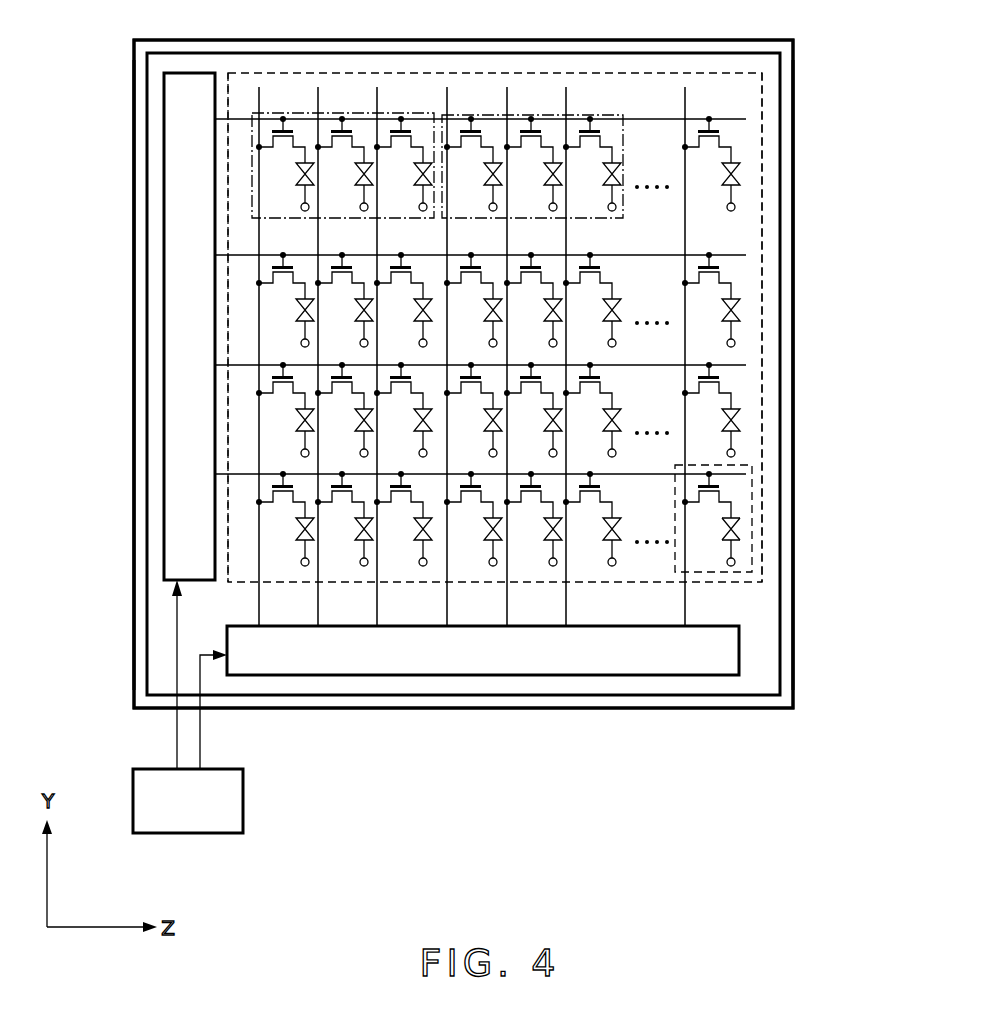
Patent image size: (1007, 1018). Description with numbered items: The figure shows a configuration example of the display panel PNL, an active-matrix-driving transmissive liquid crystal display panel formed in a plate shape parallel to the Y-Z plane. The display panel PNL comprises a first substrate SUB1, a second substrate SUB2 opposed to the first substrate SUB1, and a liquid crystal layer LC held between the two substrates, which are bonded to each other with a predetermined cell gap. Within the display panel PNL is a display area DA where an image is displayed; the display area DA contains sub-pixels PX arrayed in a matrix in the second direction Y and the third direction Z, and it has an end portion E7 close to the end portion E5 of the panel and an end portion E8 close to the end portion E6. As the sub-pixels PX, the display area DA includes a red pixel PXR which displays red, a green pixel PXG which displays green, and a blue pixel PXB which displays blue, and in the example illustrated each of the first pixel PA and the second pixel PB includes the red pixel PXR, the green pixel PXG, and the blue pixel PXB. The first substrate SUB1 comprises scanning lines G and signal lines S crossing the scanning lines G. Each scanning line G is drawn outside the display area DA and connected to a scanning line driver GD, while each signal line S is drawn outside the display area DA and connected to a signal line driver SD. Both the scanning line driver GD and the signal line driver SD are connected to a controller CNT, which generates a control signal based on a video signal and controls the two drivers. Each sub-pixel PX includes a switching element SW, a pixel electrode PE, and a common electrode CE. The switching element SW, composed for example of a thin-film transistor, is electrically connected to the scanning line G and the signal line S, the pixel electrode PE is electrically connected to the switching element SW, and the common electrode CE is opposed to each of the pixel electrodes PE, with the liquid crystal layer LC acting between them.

The display panel PNL is at (508, 714).
The first substrate SUB1 is at (348, 710).
The second substrate SUB2 is at (420, 696).
The end portion E5 is at (134, 137).
The end portion E6 is at (793, 160).
The end portion E7 is at (228, 526).
The end portion E8 is at (762, 287).
The display area DA is at (727, 583).
The scanning line driver GD is at (189, 326).
The signal line driver SD is at (483, 650).
The controller CNT is at (188, 706).
The signal line S is at (260, 99).
The scanning line G is at (733, 119).
The first pixel PA is at (252, 113).
The second pixel PB is at (623, 115).
The red pixel PXR is at (291, 196).
The green pixel PXG is at (350, 196).
The blue pixel PXB is at (409, 196).
The sub-pixel PX is at (740, 525).
The switching element SW is at (706, 512).
The pixel electrode PE is at (731, 510).
The liquid crystal layer LC is at (736, 532).
The common electrode CE is at (734, 552).